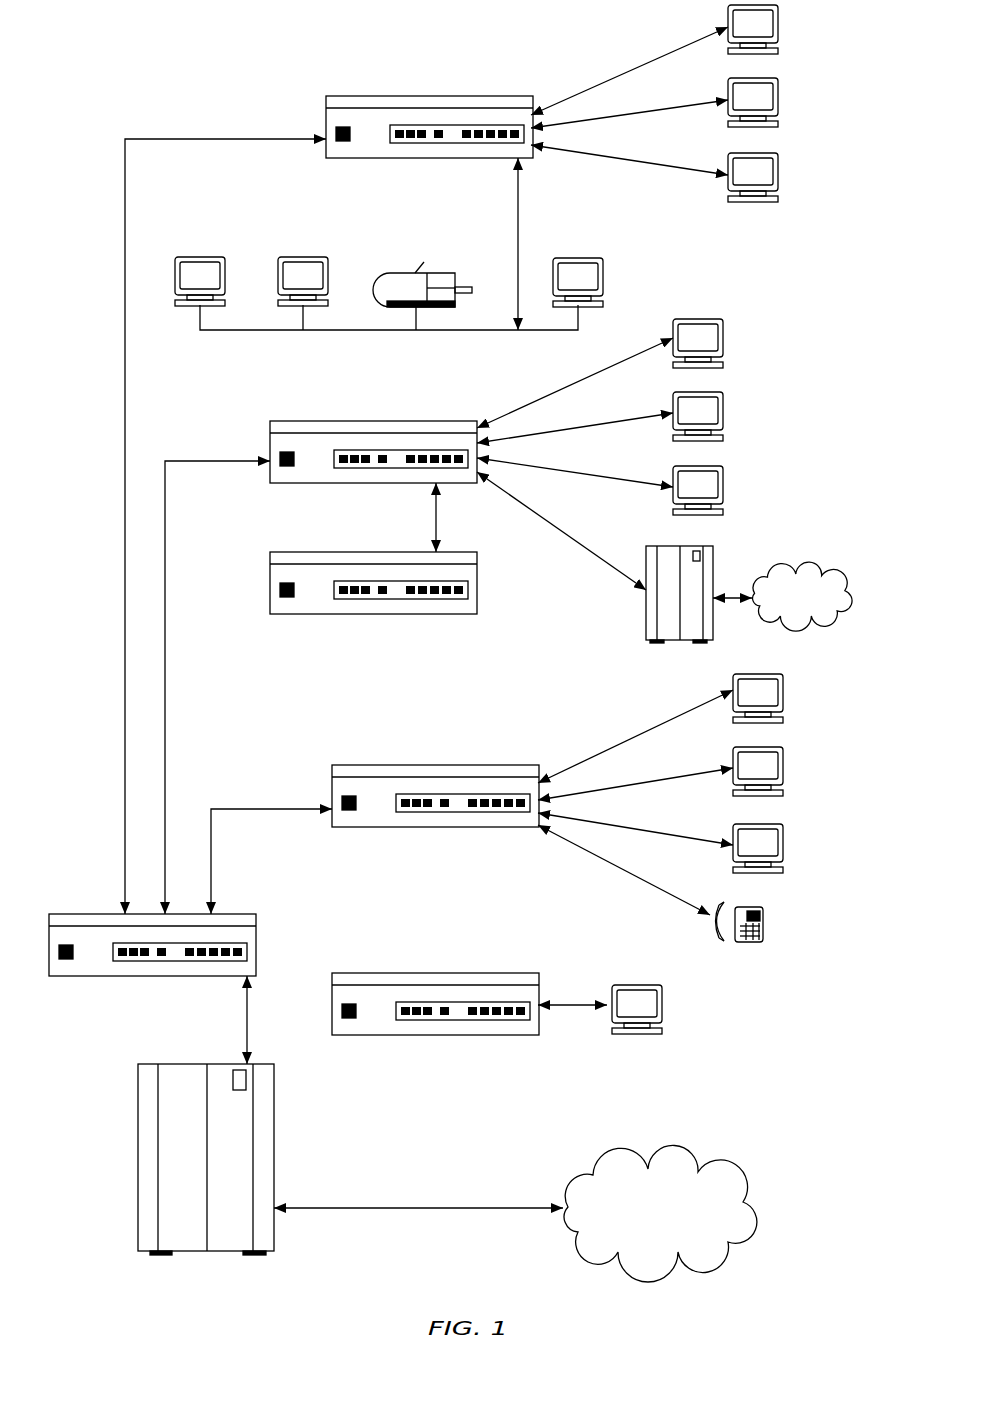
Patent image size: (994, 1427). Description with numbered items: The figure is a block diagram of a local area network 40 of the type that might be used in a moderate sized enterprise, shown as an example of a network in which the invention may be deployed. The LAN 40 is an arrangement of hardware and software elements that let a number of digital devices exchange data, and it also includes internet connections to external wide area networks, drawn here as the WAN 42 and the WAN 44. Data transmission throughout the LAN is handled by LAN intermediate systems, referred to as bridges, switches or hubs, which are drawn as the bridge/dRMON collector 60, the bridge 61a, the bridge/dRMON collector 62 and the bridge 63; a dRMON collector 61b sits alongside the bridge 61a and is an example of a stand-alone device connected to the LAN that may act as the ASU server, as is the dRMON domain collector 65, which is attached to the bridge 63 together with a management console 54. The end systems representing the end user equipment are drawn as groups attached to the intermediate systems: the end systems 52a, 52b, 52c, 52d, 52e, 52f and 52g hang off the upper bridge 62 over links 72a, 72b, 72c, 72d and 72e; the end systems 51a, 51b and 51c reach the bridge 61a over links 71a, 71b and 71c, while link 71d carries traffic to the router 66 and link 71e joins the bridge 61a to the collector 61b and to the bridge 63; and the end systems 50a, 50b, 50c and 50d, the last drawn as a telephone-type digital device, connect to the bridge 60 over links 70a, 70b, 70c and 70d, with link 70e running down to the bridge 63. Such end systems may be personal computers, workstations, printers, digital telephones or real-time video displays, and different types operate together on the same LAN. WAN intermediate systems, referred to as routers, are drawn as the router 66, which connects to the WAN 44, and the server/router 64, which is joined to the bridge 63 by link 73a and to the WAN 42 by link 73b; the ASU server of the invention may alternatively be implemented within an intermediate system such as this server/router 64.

The local area network 40 is at (74, 554).
The wide area network 42 is at (703, 1158).
The wide area network 44 is at (820, 569).
The end system 50a is at (783, 686).
The end system 50b is at (783, 759).
The end system 50c is at (783, 843).
The end system 50d is at (763, 925).
The end system 51a is at (723, 330).
The end system 51b is at (723, 405).
The end system 51c is at (723, 480).
The end system 52a is at (778, 17).
The end system 52b is at (778, 90).
The end system 52c is at (778, 165).
The end system 52d is at (578, 258).
The end system 52e is at (400, 273).
The end system 52f is at (303, 257).
The end system 52g is at (200, 257).
The management console 54 is at (662, 996).
The LAN intermediate system 60 is at (332, 788).
The LAN intermediate system 61a is at (270, 445).
The collector 61b is at (270, 575).
The LAN intermediate system 62 is at (326, 113).
The LAN intermediate system 63 is at (93, 913).
The server/router 64 is at (274, 1120).
The dRMON domain collector 65 is at (332, 993).
The WAN intermediate system 66 is at (713, 565).
The network link 70a is at (625, 742).
The network link 70b is at (715, 770).
The network link 70c is at (690, 838).
The network link 70d is at (650, 884).
The network link 70e is at (258, 811).
The network link 71a is at (566, 387).
The network link 71b is at (655, 415).
The network link 71c is at (638, 483).
The network link 71d is at (586, 550).
The network link 71e is at (205, 463).
The network link 72a is at (680, 49).
The network link 72b is at (708, 106).
The network link 72c is at (690, 169).
The network link / bus 72d is at (518, 248).
The network link 72e is at (200, 137).
The network link 73a is at (245, 1038).
The network link 73b is at (420, 1206).